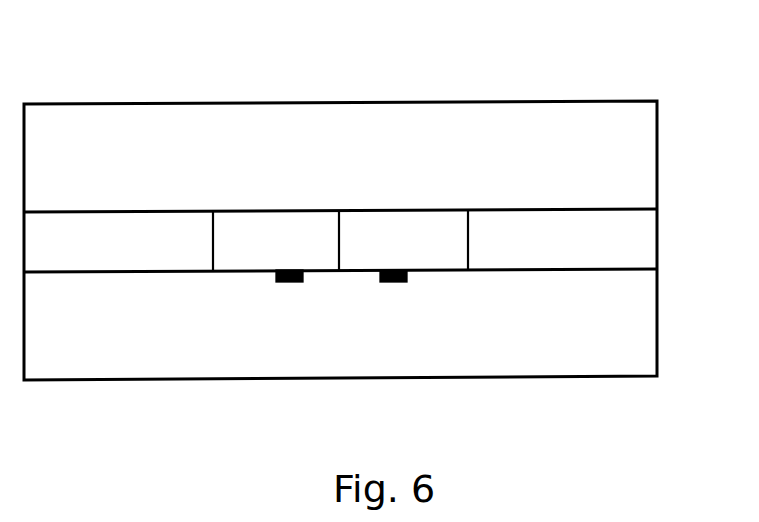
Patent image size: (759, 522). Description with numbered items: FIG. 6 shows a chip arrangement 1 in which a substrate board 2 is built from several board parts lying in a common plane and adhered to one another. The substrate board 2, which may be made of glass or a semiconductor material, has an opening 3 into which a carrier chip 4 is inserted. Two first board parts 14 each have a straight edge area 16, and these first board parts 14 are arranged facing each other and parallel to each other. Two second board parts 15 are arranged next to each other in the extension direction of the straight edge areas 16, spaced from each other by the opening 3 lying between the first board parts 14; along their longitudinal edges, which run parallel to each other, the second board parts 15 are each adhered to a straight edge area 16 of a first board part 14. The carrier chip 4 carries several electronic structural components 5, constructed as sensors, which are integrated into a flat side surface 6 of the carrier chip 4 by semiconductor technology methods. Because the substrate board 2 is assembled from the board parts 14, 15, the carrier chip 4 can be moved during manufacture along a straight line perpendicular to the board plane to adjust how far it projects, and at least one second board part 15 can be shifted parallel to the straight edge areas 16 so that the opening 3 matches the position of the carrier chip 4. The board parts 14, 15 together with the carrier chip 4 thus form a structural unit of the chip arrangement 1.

The chip arrangement 1 is at (72, 422).
The substrate board 2 is at (680, 344).
The opening 3 is at (392, 182).
The carrier chip 4 is at (287, 230).
The electronic structural components 5 is at (390, 282).
The flat side surface 6 is at (247, 280).
The first board parts 14 is at (340, 128).
The second board parts 15 is at (60, 237).
The straight edge area 16 is at (117, 210).